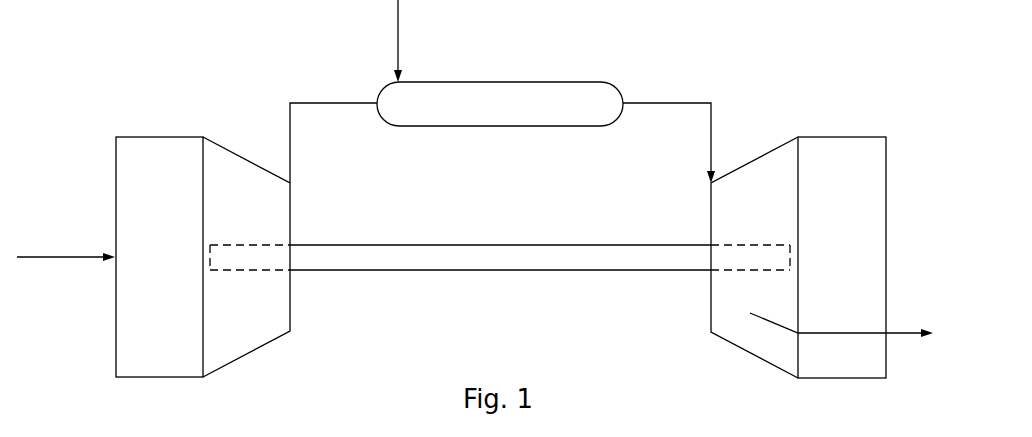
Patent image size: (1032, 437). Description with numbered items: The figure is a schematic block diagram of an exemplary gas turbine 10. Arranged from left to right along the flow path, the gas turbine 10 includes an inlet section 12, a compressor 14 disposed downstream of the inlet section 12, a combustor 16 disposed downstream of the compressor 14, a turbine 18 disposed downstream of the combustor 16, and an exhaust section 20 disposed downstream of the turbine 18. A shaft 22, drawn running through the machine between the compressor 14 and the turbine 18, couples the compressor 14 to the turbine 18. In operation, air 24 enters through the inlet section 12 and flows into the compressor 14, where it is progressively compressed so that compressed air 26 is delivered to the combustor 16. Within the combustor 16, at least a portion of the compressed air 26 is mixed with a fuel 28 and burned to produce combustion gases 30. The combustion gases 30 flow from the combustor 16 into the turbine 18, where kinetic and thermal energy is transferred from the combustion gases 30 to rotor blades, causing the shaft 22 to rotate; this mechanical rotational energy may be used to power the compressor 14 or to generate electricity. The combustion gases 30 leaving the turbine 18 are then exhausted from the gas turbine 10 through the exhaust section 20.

The gas turbine 10 is at (343, 26).
The inlet section 12 is at (158, 137).
The compressor 14 is at (222, 142).
The combustor 16 is at (555, 82).
The turbine 18 is at (780, 147).
The exhaust section 20 is at (860, 137).
The shaft 22 is at (383, 270).
The air 24 is at (80, 255).
The compressed air 26 is at (325, 103).
The fuel 28 is at (398, 31).
The combustion gases 30 is at (653, 103).